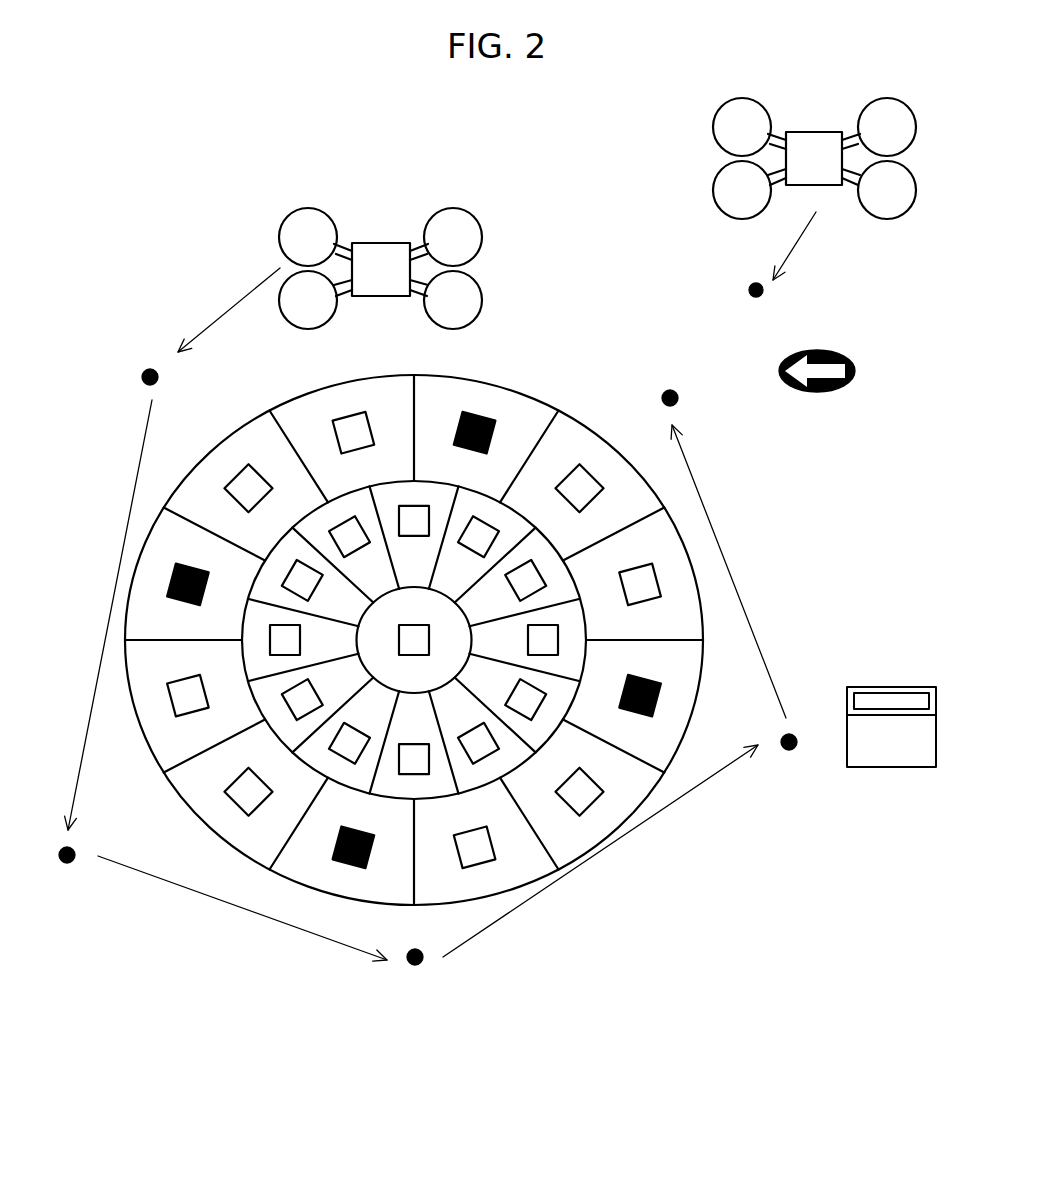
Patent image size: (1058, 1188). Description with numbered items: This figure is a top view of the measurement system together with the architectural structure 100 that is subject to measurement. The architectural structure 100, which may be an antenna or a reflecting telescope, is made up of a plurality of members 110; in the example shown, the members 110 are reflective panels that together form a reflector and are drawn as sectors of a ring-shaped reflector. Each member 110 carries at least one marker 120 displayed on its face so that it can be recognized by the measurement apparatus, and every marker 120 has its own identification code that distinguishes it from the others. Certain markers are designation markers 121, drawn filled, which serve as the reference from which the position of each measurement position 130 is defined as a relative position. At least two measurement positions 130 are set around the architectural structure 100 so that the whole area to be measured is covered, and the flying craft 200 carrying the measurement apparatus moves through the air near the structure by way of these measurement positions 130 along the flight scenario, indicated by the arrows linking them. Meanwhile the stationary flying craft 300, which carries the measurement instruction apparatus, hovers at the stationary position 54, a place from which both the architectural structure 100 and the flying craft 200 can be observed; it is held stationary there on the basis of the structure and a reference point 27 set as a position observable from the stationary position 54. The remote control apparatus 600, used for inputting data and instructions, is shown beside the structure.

The architectural structure 100 is at (555, 405).
The member 110 is at (390, 372).
The marker 120 is at (363, 442).
The designation marker 121 is at (468, 443).
The measurement position 130 is at (152, 366).
The flying craft 200 is at (385, 243).
The stationary flying craft 300 is at (820, 131).
The stationary position 54 is at (756, 283).
The reference point 27 is at (841, 351).
The remote control apparatus 600 is at (939, 686).